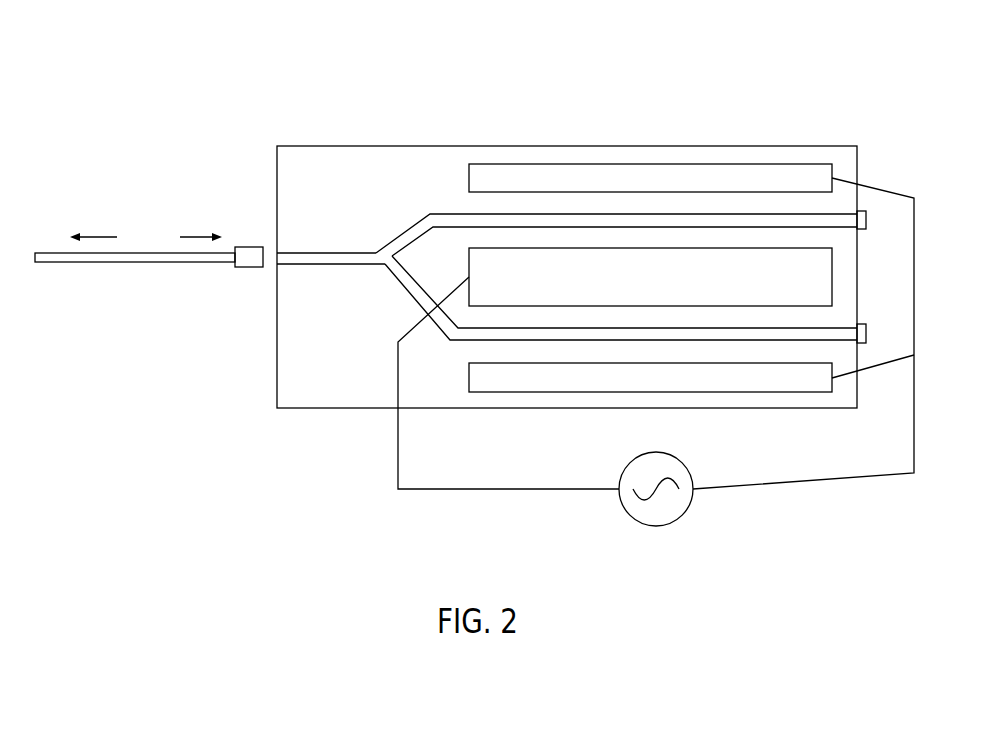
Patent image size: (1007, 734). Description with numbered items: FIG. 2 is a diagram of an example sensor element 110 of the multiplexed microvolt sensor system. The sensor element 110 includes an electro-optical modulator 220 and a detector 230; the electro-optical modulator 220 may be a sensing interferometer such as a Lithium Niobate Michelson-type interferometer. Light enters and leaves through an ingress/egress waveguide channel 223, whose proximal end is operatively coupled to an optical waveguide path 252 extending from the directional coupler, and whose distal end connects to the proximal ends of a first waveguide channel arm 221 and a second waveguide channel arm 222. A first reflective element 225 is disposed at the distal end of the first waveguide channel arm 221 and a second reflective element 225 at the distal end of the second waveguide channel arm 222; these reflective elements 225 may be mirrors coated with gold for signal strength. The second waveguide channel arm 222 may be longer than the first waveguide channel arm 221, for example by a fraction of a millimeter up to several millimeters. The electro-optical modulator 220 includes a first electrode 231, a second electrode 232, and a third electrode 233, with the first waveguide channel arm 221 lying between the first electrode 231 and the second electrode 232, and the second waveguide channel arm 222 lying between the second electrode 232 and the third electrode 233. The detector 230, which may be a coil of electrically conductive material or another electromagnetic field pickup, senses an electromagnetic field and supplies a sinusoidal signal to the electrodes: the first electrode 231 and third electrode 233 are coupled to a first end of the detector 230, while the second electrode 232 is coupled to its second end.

The sensor element 110 is at (229, 40).
The electro-optical modulator 220 is at (318, 220).
The first waveguide channel arm 221 is at (414, 225).
The second waveguide channel arm 222 is at (402, 287).
The ingress/egress waveguide channel 223 is at (312, 264).
The reflective elements 225 is at (867, 332).
The detector 230 is at (680, 517).
The first electrode 231 is at (717, 172).
The second electrode 232 is at (769, 288).
The third electrode 233 is at (772, 383).
The optical waveguide path 252 is at (137, 263).